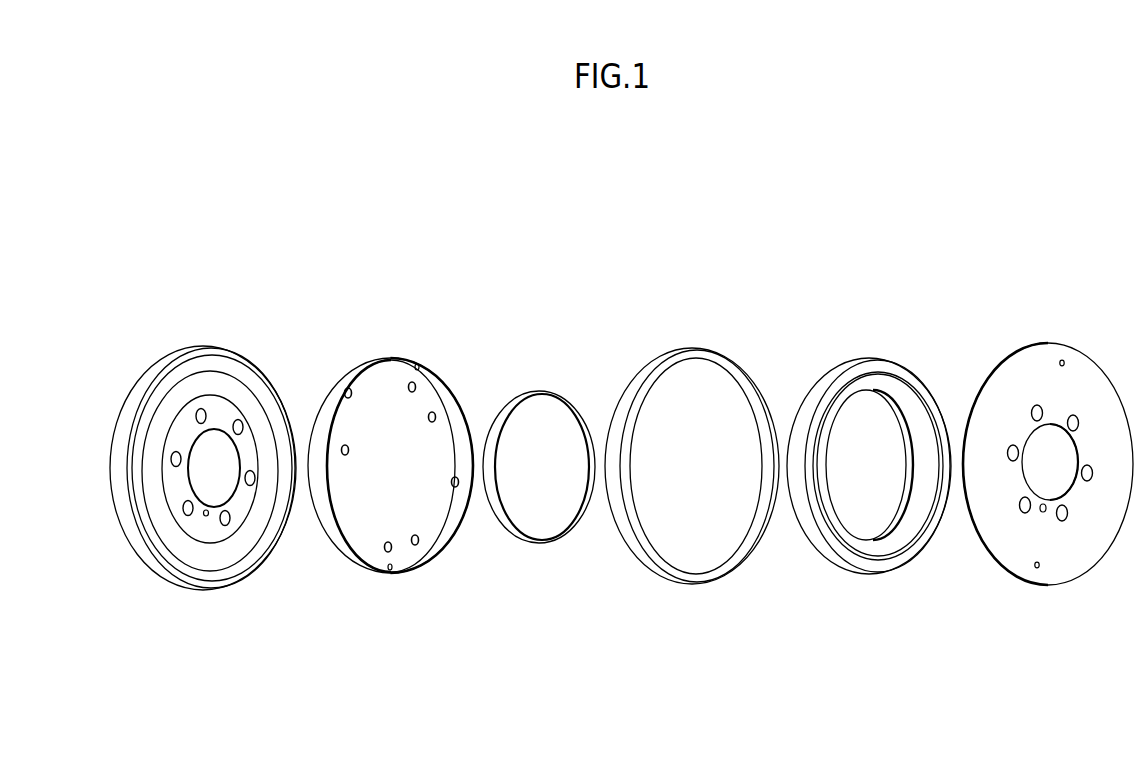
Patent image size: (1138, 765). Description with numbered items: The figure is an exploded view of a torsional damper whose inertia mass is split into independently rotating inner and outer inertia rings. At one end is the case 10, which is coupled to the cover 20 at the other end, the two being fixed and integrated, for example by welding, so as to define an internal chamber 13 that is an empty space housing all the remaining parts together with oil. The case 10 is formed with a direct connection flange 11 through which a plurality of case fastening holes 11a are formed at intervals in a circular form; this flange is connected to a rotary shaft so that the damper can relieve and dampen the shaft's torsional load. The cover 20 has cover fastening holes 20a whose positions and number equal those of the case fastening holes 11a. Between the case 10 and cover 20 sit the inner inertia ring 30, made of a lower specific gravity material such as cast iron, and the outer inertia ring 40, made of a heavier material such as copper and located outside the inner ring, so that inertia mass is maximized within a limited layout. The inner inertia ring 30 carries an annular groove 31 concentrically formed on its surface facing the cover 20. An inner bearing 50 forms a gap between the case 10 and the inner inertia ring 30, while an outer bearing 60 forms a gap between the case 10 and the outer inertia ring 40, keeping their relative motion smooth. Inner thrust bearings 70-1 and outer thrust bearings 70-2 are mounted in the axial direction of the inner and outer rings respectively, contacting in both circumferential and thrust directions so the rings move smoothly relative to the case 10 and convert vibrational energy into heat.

The case 10 is at (202, 348).
The direct connection flange 11 is at (220, 415).
The case fastening holes 11a is at (222, 522).
The internal chamber 13 is at (166, 393).
The cover 20 is at (1047, 344).
The cover fastening holes 20a is at (1077, 420).
The inner inertia ring 30 is at (862, 358).
The annular groove 31 is at (897, 377).
The outer inertia ring 40 is at (690, 349).
The inner bearing 50 is at (540, 393).
The outer bearing 60 is at (392, 360).
The inner thrust bearings 70-1 is at (415, 542).
The outer thrust bearings 70-2 is at (390, 566).